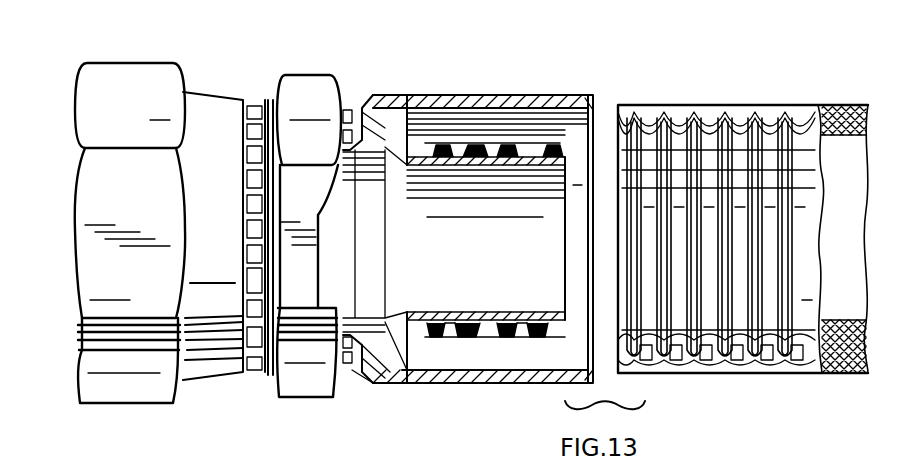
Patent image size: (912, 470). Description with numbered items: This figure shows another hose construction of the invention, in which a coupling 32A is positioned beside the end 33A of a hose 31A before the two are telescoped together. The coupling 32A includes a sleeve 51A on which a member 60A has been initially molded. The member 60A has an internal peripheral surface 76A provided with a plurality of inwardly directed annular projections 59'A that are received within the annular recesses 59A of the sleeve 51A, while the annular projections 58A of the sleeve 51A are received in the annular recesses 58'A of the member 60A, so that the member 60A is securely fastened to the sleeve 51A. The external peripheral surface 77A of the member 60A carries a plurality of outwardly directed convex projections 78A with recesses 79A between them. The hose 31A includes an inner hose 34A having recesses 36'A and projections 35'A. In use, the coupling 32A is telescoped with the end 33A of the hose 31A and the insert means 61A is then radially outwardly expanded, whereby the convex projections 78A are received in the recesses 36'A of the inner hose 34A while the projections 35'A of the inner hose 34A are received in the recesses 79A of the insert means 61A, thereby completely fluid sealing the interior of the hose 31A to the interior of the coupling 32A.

The coupling 32A is at (307, 83).
The sleeve 51A is at (592, 110).
The insert means 61A is at (455, 140).
The member 60A is at (513, 142).
The annular projections 58A is at (535, 143).
The annular recesses 59A is at (547, 143).
The internal peripheral surface 76A is at (477, 323).
The annular recesses 58'A is at (496, 302).
The annular projections 59'A is at (530, 288).
The external peripheral surface 77A is at (465, 338).
The convex projections 78A is at (500, 338).
The recesses 79A is at (517, 338).
The hose 31A is at (790, 110).
The end of the hose 33A is at (662, 112).
The inner hose 34A is at (826, 118).
The projections of the inner hose 35'A is at (837, 239).
The recesses of the inner hose 36'A is at (818, 289).